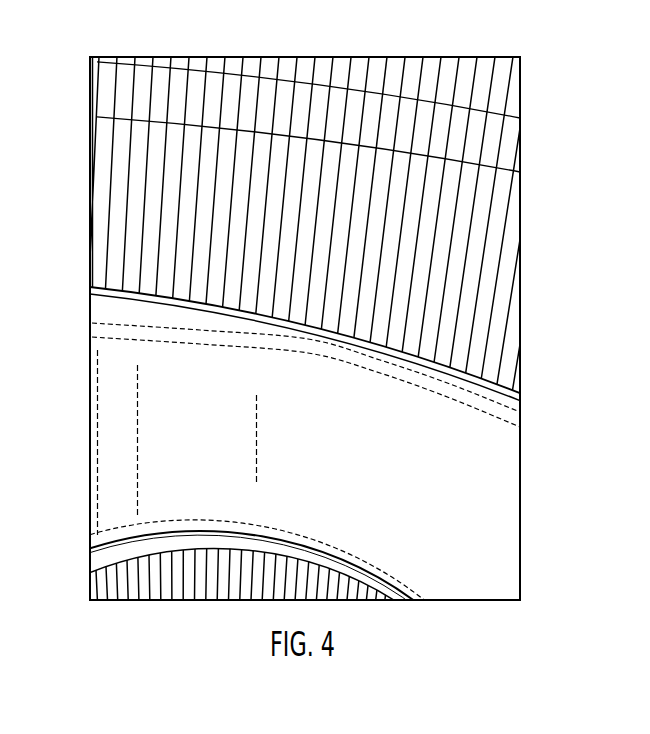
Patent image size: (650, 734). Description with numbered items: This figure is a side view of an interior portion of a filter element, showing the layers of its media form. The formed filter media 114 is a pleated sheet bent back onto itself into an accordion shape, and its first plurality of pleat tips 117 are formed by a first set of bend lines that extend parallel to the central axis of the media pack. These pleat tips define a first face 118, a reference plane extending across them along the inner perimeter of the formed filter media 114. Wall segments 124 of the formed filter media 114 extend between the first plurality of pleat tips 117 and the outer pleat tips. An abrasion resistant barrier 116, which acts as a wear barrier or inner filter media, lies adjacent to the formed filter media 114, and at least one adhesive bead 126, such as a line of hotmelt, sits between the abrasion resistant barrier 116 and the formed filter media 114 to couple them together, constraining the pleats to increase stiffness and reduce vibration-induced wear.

The formed filter media 114 is at (268, 50).
The abrasion resistant barrier 116 is at (104, 188).
The first plurality of pleat tips 117 is at (388, 82).
The first face 118 is at (513, 309).
The wall segments 124 is at (384, 72).
The adhesive bead 126 is at (503, 136).